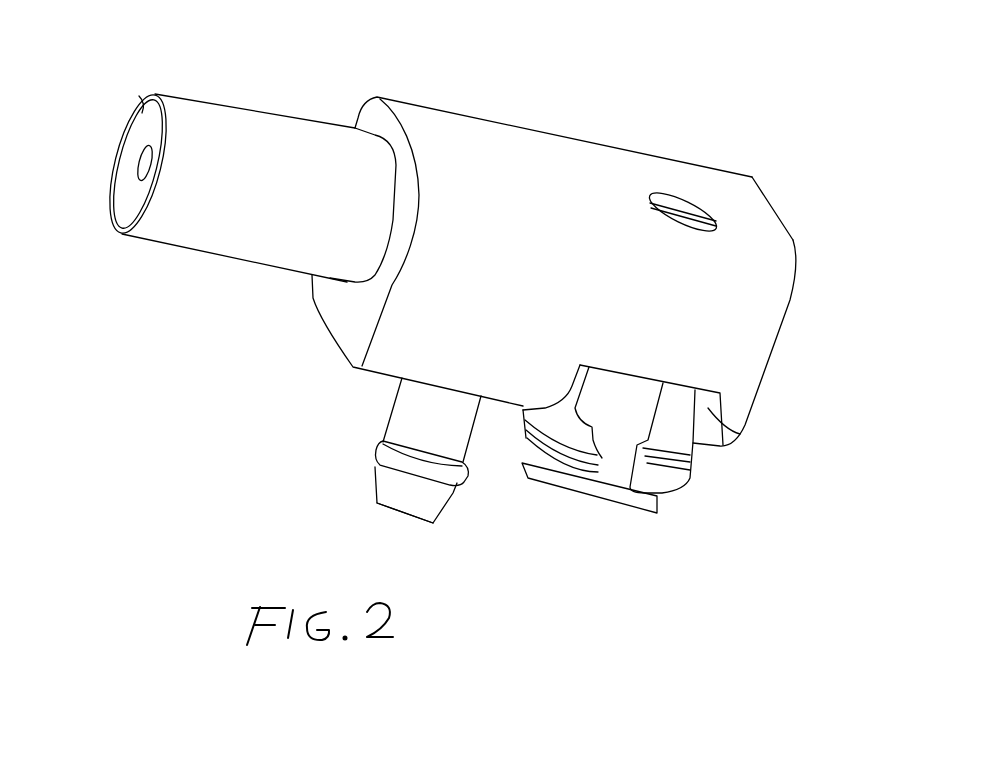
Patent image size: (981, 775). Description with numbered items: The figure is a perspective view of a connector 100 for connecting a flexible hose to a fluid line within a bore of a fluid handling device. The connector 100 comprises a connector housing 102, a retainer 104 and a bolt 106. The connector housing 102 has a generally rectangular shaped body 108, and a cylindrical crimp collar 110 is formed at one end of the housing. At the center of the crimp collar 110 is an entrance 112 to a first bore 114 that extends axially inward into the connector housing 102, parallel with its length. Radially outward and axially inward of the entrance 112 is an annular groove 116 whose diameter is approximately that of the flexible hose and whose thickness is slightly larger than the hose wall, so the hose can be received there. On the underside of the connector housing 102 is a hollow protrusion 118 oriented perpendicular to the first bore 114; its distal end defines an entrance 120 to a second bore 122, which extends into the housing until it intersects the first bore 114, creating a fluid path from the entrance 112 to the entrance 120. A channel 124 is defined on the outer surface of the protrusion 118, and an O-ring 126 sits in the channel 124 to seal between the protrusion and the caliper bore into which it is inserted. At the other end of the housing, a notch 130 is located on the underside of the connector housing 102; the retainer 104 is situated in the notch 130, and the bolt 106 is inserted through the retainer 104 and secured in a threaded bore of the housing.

The connector 100 is at (623, 113).
The connector housing 102 is at (500, 140).
The retainer 104 is at (693, 472).
The bolt 106 is at (607, 480).
The body 108 is at (757, 218).
The crimp collar 110 is at (230, 117).
The entrance 112 is at (141, 160).
The first bore 114 is at (137, 170).
The annular groove 116 is at (137, 95).
The protrusion 118 is at (408, 402).
The entrance 120 is at (403, 522).
The second bore 122 is at (417, 527).
The channel 124 is at (463, 467).
The O-ring 126 is at (377, 450).
The notch 130 is at (708, 403).